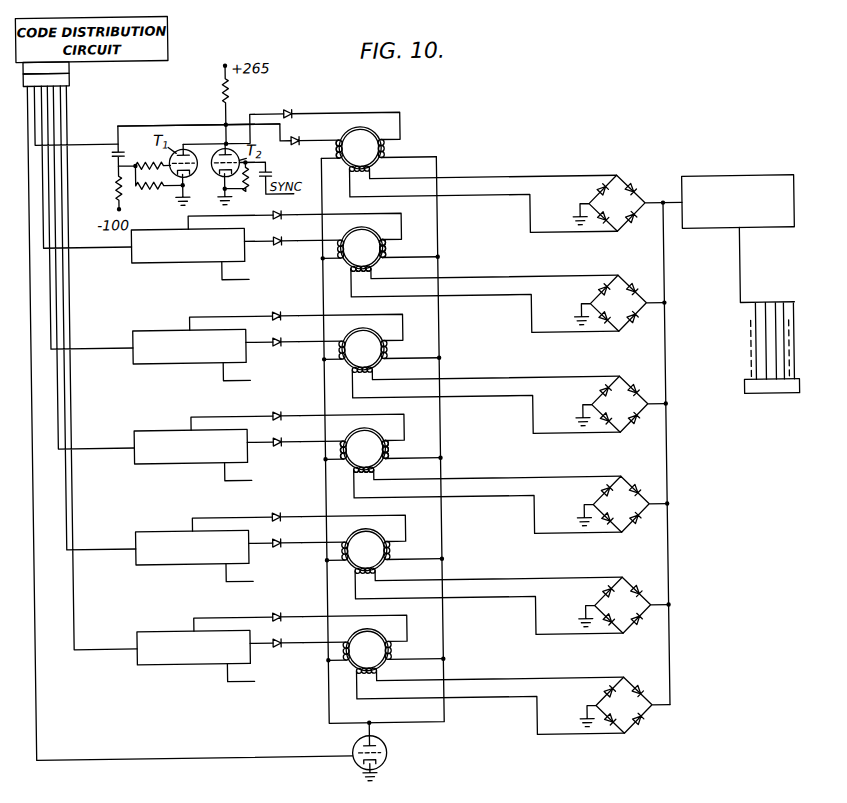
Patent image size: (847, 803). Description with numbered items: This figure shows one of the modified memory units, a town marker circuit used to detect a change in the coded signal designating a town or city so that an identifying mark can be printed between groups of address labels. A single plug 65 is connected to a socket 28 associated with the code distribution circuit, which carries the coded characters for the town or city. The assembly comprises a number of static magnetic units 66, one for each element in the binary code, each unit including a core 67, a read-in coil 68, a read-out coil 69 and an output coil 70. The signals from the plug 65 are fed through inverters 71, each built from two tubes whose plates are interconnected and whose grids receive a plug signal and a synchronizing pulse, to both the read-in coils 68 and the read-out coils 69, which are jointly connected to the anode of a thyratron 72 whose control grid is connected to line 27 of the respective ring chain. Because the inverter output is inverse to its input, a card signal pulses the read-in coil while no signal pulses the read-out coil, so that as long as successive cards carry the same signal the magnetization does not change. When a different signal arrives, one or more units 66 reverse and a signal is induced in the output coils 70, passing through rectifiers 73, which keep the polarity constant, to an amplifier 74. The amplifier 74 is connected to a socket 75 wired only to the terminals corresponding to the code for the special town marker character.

The line 27 is at (33, 668).
The socket 28 is at (68, 66).
The plug 65 is at (70, 81).
The static magnetic unit 66 is at (347, 132).
The core 67 is at (381, 233).
The read-in coil 68 is at (337, 146).
The read-out coil 69 is at (389, 241).
The output coil 70 is at (355, 270).
The inverter 71 is at (211, 134).
The thyratron 72 is at (384, 755).
The rectifier 73 is at (608, 186).
The amplifier 74 is at (731, 182).
The socket 75 is at (743, 390).